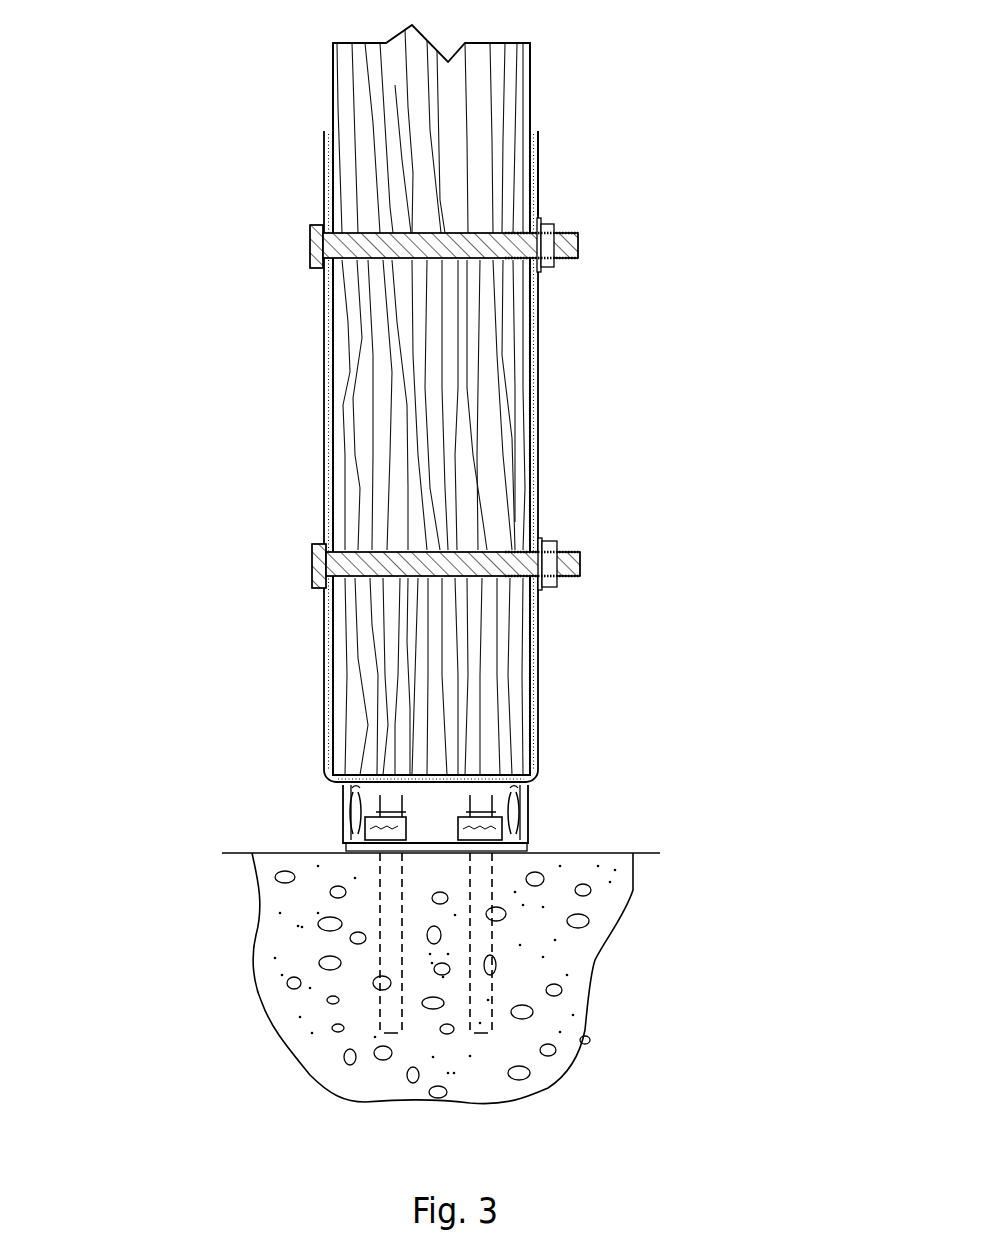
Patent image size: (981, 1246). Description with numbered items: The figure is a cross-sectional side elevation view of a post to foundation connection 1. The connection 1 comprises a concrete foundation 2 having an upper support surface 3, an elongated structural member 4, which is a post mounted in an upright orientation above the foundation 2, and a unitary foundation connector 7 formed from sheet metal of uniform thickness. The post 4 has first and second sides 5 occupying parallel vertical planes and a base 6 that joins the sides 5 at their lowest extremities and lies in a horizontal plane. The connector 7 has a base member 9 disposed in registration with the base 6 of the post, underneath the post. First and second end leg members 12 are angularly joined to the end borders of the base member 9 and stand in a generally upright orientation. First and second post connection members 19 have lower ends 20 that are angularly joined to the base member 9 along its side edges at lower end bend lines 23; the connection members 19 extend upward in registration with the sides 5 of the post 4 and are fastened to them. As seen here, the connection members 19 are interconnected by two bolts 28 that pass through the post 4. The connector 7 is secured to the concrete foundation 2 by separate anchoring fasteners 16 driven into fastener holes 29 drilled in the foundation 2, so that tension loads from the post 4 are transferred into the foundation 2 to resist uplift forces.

The post to foundation connection 1 is at (574, 762).
The concrete foundation 2 is at (256, 983).
The upper support surface 3 is at (264, 857).
The elongated structural member 4 is at (333, 57).
The first and second sides 5 is at (532, 103).
The base 6 is at (528, 808).
The unitary foundation connector 7 is at (546, 180).
The base member 9 is at (477, 775).
The first and second end leg members 12 is at (356, 820).
The anchoring fasteners 16 is at (390, 817).
The first and second post connection members 19 is at (545, 403).
The first and second lower ends 20 is at (343, 770).
The lower end bend lines 23 is at (340, 772).
The fasteners 28 is at (580, 245).
The fastener holes 29 is at (378, 946).